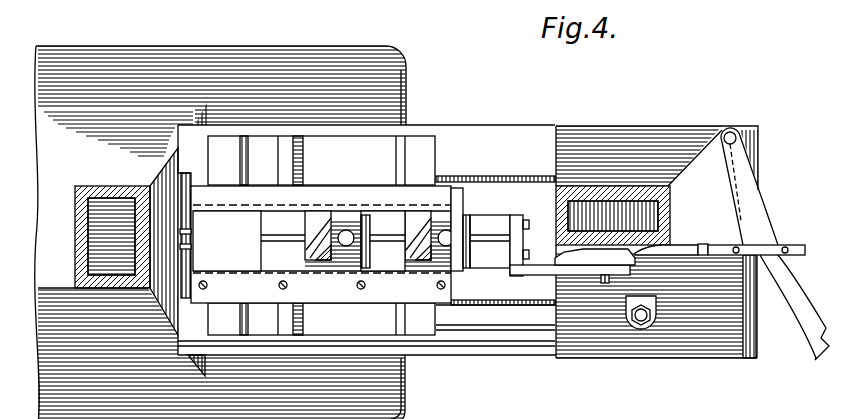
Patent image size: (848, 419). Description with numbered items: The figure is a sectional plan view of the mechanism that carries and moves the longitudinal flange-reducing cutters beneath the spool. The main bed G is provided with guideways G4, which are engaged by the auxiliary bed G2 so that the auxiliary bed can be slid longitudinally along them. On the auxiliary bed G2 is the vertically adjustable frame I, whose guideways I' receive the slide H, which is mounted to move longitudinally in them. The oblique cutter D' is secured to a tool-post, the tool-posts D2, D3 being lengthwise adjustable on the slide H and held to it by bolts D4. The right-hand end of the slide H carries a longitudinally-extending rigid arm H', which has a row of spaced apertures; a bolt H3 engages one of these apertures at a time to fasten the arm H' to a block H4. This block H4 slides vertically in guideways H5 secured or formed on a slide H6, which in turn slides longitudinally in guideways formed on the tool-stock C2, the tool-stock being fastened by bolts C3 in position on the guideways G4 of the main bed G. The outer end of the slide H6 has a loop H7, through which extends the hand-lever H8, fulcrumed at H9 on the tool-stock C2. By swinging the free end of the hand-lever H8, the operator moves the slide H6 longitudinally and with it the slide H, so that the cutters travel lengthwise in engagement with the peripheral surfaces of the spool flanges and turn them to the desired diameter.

The main bed G is at (279, 47).
The auxiliary bed G2 is at (321, 235).
The guideways G4 is at (497, 129).
The frame I is at (321, 234).
The guideways I' is at (220, 241).
The slide H is at (383, 232).
The rigid arm H' is at (570, 282).
The bolt H3 is at (595, 276).
The block H4 is at (586, 252).
The guideways H5 is at (660, 240).
The slide H6 is at (694, 237).
The loop H7 is at (770, 239).
The hand-lever H8 is at (785, 287).
The fulcrum H9 is at (726, 124).
The cutter D' is at (383, 226).
The tool-post D2 is at (334, 212).
The tool-post D3 is at (441, 213).
The bolts D4 is at (354, 231).
The tool-stock C2 is at (578, 180).
The bolts C3 is at (633, 318).